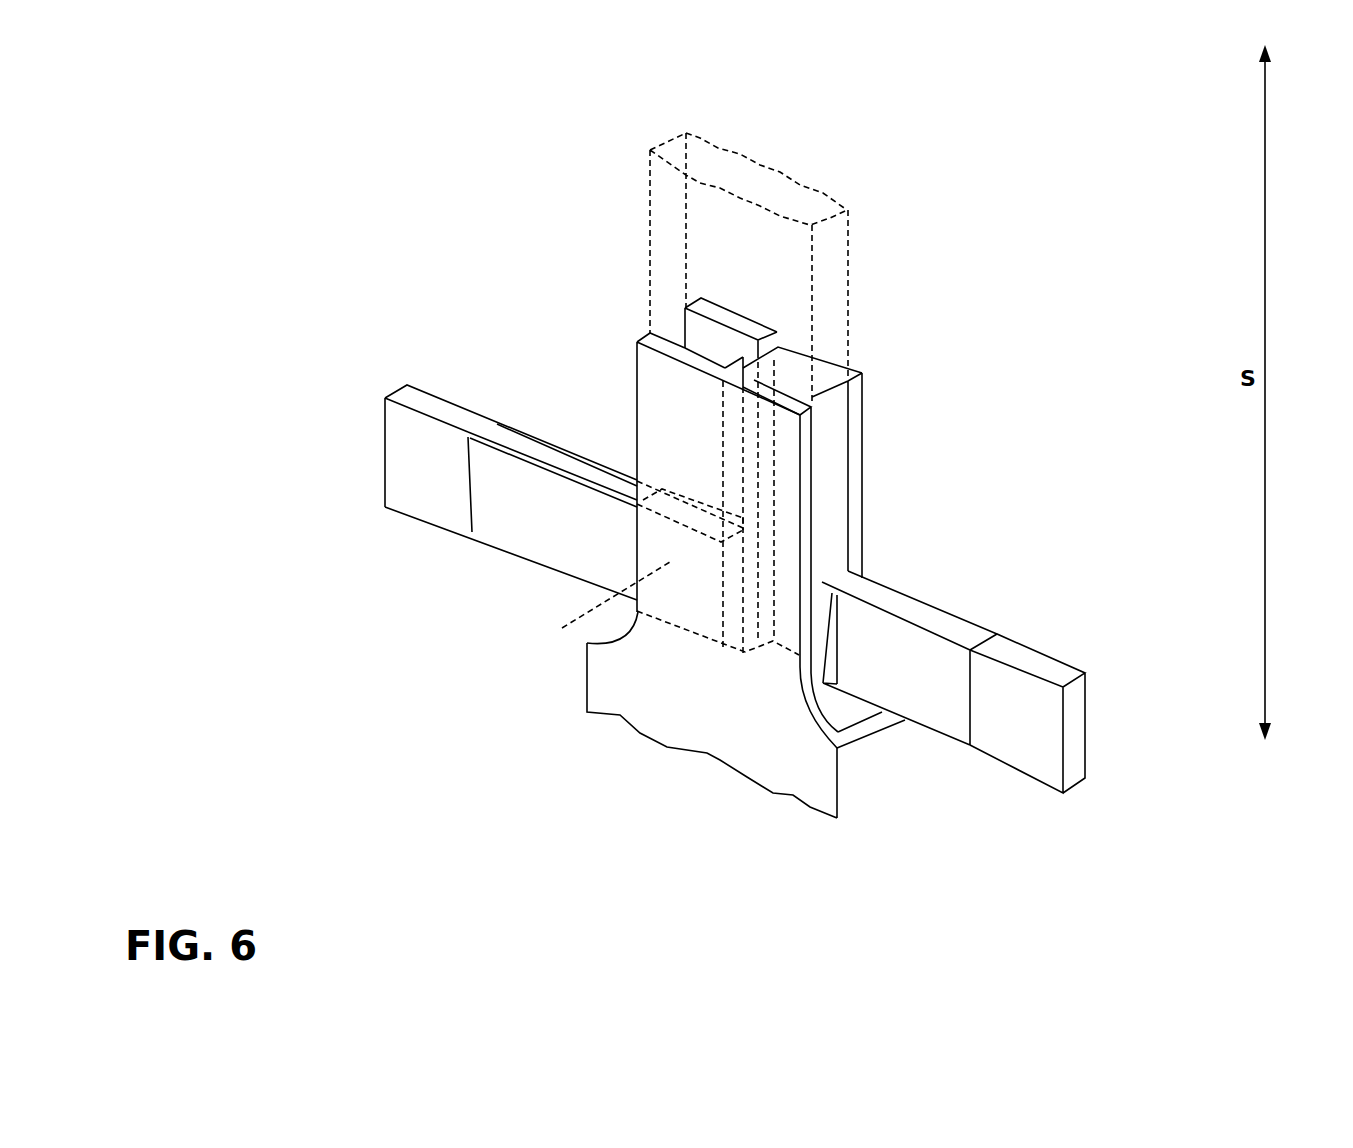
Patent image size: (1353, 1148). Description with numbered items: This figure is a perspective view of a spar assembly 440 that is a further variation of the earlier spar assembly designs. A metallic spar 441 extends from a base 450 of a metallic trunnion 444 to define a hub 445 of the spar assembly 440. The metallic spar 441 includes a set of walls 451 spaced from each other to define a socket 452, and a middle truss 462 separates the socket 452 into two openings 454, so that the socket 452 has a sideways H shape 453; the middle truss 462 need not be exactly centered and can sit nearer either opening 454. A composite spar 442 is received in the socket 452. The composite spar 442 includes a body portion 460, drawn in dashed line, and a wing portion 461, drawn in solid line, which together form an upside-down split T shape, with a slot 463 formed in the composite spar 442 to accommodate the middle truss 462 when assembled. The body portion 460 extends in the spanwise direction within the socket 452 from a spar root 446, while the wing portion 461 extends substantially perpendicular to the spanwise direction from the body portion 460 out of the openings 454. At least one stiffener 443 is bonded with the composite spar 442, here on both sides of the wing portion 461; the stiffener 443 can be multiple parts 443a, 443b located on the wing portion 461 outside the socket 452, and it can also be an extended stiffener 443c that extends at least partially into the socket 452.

The spar assembly 440 is at (392, 108).
The metallic spar 441 is at (694, 460).
The composite spar 442 is at (828, 190).
The stiffener 443 is at (765, 584).
The stiffener part 443a is at (555, 498).
The stiffener part 443b is at (905, 665).
The extended stiffener 443c is at (625, 560).
The metallic trunnion 444 is at (661, 658).
The hub 445 is at (879, 748).
The spar root 446 is at (423, 518).
The base 450 is at (668, 715).
The set of walls 451 is at (891, 494).
The socket 452 is at (716, 340).
The sideways H shape 453 is at (860, 371).
The opening 454 is at (832, 483).
The body portion 460 is at (828, 287).
The wing portion 461 is at (1035, 731).
The middle truss 462 is at (744, 366).
The slot 463 is at (726, 403).